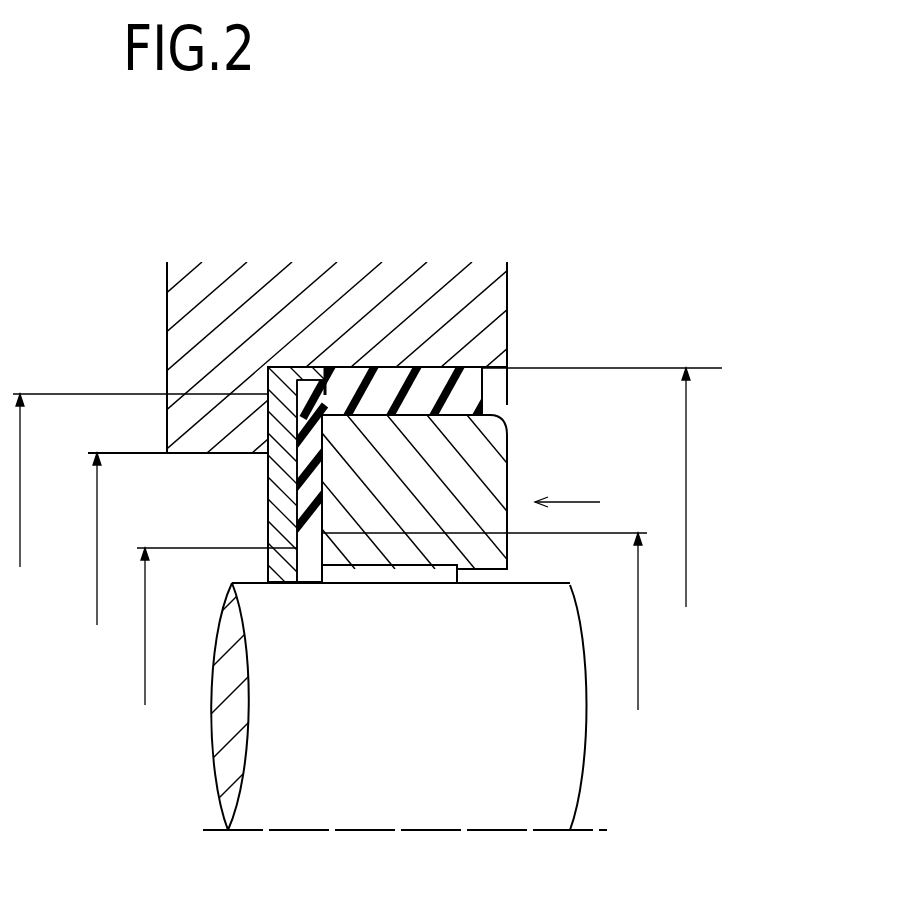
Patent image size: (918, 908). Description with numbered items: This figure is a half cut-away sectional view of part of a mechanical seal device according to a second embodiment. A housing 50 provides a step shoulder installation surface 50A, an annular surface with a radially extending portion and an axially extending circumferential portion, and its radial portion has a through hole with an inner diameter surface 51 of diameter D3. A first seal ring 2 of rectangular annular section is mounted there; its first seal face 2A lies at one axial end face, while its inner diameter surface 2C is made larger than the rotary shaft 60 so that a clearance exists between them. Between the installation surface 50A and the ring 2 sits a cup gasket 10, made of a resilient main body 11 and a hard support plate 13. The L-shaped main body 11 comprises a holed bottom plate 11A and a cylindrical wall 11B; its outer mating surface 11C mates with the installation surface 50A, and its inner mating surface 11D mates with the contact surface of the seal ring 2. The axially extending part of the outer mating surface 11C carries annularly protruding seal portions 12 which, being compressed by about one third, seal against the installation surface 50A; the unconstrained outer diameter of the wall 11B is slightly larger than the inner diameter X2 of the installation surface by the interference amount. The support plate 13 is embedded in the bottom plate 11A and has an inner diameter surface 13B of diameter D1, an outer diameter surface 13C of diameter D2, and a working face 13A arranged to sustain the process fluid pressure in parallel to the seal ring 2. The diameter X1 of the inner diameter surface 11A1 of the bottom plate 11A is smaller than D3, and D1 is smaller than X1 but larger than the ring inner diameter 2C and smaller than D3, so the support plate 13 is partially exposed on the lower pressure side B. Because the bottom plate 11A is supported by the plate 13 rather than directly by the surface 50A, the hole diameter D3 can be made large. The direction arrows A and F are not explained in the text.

The first seal ring 2 is at (383, 700).
The first seal face 2A is at (431, 499).
The inner diameter surface 2C is at (414, 607).
The cup gasket 10 is at (640, 300).
The main body 11 is at (375, 395).
The holed bottom plate 11A is at (240, 546).
The inner diameter surface 11A1 is at (330, 583).
The cylindrical wall 11B is at (549, 368).
The outer mating surface 11C is at (601, 344).
The inner mating surface 11D is at (449, 419).
The seal portions 12 is at (400, 369).
The support plate 13 is at (298, 474).
The working face 13A is at (438, 481).
The inner diameter surface 13B is at (286, 621).
The outer diameter surface 13C is at (261, 296).
The housing 50 is at (515, 188).
The step shoulder installation surface 50A is at (387, 263).
The inner diameter surface 51 is at (196, 482).
The rotary shaft 60 is at (372, 816).
The direction A is at (618, 232).
The lower pressure side B is at (208, 518).
The force F is at (578, 501).
The diameter of the inner diameter surface of the support plate D1 is at (213, 641).
The diameter of the outer diameter surface of the support plate D2 is at (136, 497).
The diameter of the inner diameter surface of the housing D3 is at (126, 553).
The diameter of the inner diameter surface of the holed bottom plate X1 is at (486, 637).
The inner diameter of the step shoulder installation surface X2 is at (601, 503).